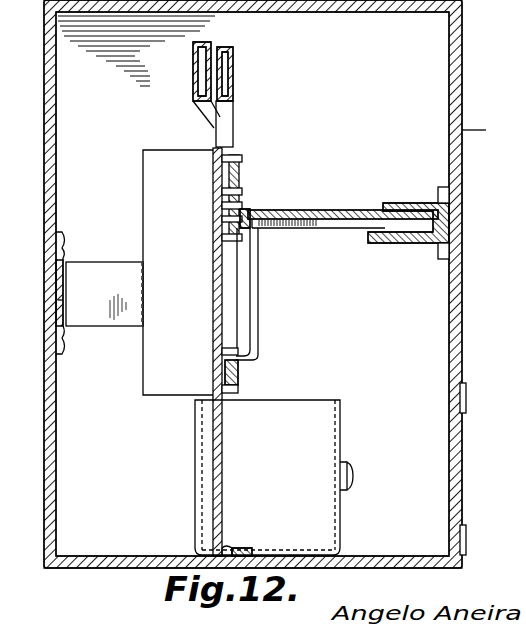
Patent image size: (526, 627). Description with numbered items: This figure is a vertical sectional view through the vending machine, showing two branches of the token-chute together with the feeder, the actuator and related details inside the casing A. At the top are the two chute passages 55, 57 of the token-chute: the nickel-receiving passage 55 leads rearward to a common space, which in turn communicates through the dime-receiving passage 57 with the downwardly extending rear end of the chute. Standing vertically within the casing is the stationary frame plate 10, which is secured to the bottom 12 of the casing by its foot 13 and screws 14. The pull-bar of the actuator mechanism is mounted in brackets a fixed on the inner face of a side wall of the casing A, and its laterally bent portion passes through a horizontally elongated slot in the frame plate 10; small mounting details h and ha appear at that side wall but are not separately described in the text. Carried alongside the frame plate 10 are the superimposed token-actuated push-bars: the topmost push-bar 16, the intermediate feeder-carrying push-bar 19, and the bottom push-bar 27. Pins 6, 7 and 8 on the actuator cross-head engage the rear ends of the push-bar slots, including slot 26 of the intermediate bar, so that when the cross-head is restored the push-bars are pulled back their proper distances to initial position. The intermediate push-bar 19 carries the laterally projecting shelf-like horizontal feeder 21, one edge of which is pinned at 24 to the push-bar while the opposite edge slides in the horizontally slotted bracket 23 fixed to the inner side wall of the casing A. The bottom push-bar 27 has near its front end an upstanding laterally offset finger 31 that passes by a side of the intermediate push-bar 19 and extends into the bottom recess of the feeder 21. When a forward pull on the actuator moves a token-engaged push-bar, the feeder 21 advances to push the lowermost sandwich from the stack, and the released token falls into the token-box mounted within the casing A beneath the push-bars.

The casing A is at (272, 284).
The chute passage 55 is at (198, 50).
The chute passage 57 is at (235, 80).
The frame plate 10 is at (221, 450).
The slot 26 is at (157, 176).
The bracket a is at (66, 282).
The mounting strip h is at (68, 264).
The mounting strip extension ha is at (118, 326).
The topmost push-bar 16 is at (240, 172).
The pin 6 is at (222, 191).
The pin 7 is at (222, 238).
The intermediate push-bar 19 is at (222, 228).
The pin 24 is at (249, 213).
The feeder 21 is at (345, 205).
The bracket 23 is at (402, 205).
The finger 31 is at (259, 298).
The bottom push-bar 27 is at (238, 378).
The pin 8 is at (222, 388).
The bottom 12 is at (280, 555).
The foot 13 is at (232, 550).
The screw 14 is at (243, 548).